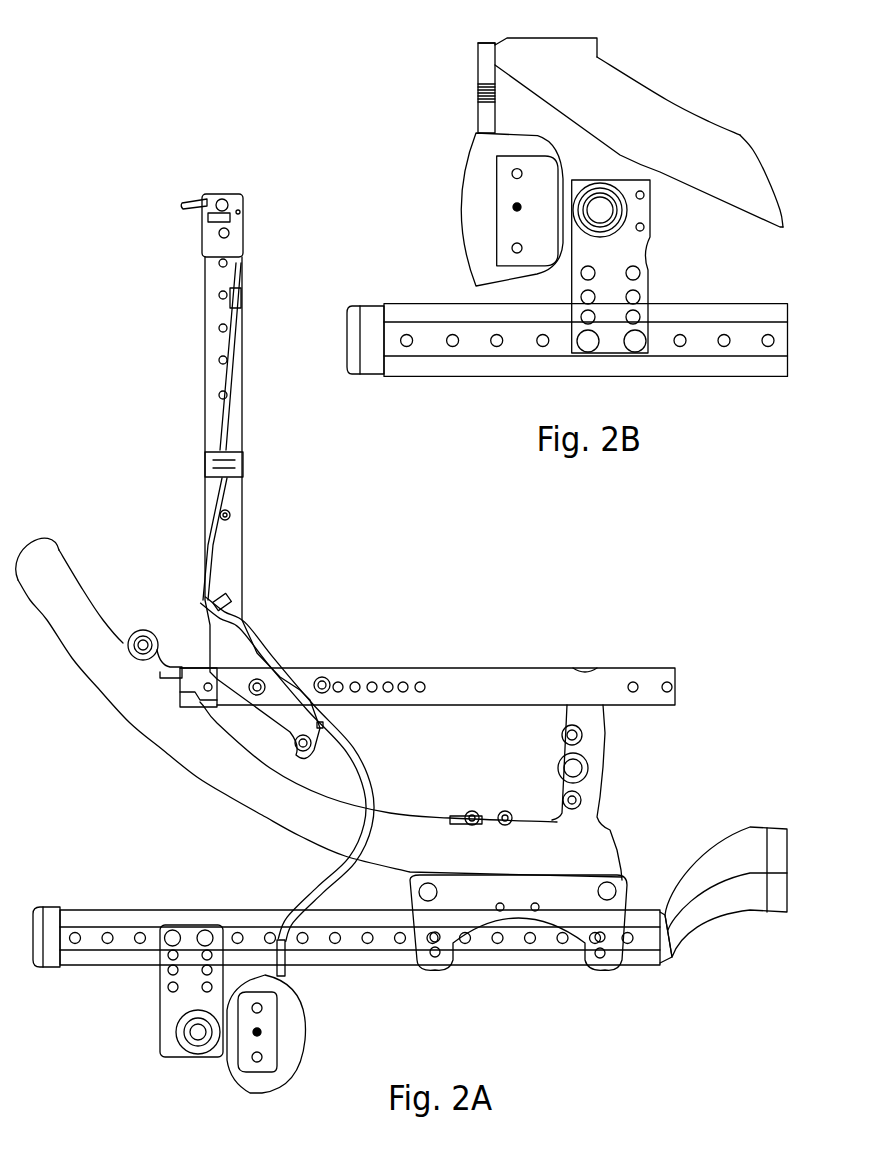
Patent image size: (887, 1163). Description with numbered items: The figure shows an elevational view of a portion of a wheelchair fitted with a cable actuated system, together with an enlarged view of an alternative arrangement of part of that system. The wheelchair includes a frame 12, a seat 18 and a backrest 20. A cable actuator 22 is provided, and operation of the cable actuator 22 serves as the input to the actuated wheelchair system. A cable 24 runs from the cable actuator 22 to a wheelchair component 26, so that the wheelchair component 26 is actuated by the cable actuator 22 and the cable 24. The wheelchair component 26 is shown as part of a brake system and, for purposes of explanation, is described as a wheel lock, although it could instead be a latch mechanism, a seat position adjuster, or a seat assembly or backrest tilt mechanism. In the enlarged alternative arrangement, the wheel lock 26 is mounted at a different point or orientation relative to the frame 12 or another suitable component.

In FIG. 2A, the frame 12 is at (120, 923).
In FIG. 2B, the frame 12 is at (494, 368).
In FIG. 2A, the seat 18 is at (460, 685).
In FIG. 2A, the backrest 20 is at (233, 550).
In FIG. 2A, the cable actuator 22 is at (175, 187).
In FIG. 2A, the cable 24 is at (220, 403).
In FIG. 2A, the wheelchair component 26 is at (340, 1006).
In FIG. 2B, the wheelchair component 26 is at (448, 119).